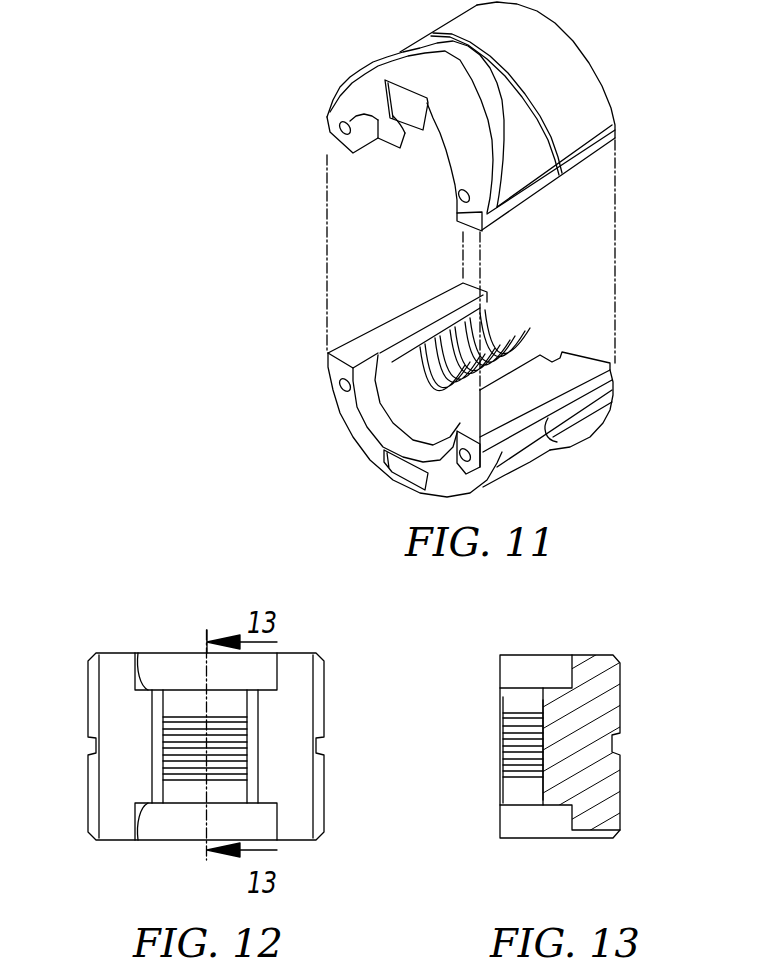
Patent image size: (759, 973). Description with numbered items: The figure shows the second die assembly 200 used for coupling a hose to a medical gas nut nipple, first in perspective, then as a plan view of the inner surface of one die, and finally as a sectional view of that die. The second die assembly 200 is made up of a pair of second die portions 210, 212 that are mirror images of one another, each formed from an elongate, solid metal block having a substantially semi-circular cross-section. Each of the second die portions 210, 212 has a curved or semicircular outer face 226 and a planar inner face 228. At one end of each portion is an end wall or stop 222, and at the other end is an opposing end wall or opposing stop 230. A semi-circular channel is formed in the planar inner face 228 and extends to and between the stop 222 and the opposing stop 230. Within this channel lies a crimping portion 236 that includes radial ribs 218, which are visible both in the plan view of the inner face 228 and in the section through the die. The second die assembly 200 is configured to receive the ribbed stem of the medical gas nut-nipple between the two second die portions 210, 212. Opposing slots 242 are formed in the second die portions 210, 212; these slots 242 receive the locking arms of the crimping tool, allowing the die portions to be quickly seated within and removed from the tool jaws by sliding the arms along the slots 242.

In FIG. 11, the second die assembly 200 is at (641, 60).
In FIG. 11, the second die portion 210 is at (348, 108).
In FIG. 11, the second die portion 212 is at (358, 441).
In FIG. 12, the radial ribs 218 is at (163, 737).
In FIG. 13, the radial ribs 218 is at (540, 737).
In FIG. 11, the end wall or stop 222 is at (392, 383).
In FIG. 12, the end wall or stop 222 is at (147, 685).
In FIG. 13, the end wall or stop 222 is at (552, 683).
In FIG. 11, the curved or semicircular outer face 226 is at (570, 447).
In FIG. 11, the planar inner face 228 is at (388, 330).
In FIG. 12, the planar inner face 228 is at (293, 662).
In FIG. 11, the opposing end wall or opposing stop 230 is at (560, 357).
In FIG. 12, the opposing end wall or opposing stop 230 is at (137, 833).
In FIG. 13, the opposing end wall or opposing stop 230 is at (552, 807).
In FIG. 11, the crimping portion 236 is at (468, 352).
In FIG. 13, the crimping portion 236 is at (473, 776).
In FIG. 12, the opposing slots 242 is at (96, 673).